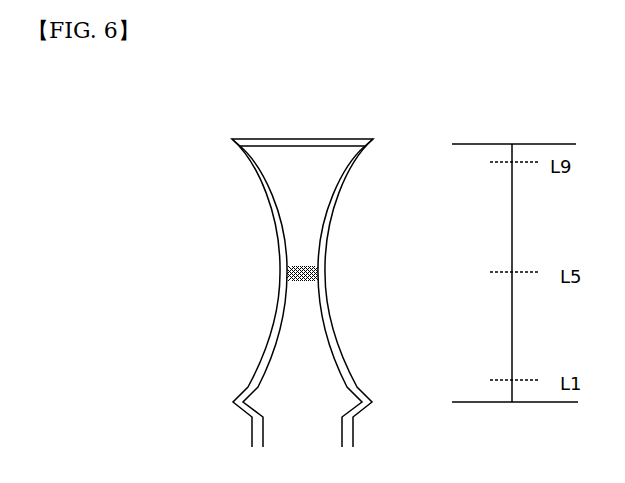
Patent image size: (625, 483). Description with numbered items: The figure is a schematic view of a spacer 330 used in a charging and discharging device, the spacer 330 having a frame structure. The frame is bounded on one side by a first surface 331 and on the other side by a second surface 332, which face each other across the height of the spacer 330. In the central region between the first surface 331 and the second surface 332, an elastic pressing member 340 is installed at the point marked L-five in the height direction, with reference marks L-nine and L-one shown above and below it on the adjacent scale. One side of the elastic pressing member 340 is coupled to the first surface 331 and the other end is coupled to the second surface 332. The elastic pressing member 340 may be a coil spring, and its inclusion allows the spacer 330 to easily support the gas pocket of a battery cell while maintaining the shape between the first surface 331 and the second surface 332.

The spacer 330 is at (80, 126).
The first surface 331 is at (258, 360).
The second surface 332 is at (345, 350).
The elastic pressing member 340 is at (330, 272).